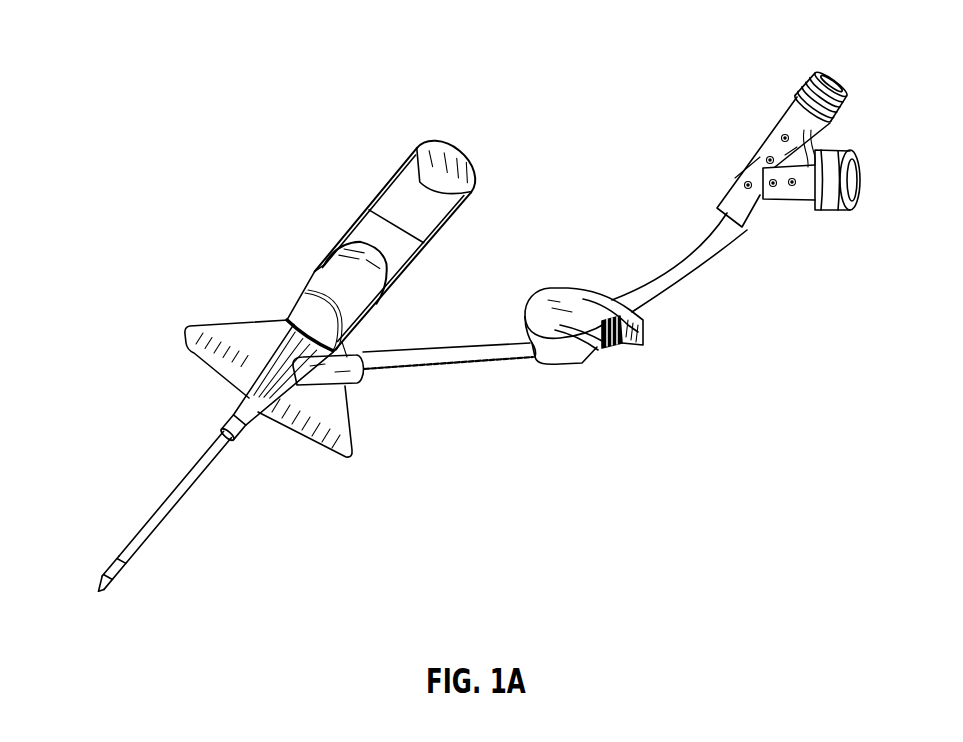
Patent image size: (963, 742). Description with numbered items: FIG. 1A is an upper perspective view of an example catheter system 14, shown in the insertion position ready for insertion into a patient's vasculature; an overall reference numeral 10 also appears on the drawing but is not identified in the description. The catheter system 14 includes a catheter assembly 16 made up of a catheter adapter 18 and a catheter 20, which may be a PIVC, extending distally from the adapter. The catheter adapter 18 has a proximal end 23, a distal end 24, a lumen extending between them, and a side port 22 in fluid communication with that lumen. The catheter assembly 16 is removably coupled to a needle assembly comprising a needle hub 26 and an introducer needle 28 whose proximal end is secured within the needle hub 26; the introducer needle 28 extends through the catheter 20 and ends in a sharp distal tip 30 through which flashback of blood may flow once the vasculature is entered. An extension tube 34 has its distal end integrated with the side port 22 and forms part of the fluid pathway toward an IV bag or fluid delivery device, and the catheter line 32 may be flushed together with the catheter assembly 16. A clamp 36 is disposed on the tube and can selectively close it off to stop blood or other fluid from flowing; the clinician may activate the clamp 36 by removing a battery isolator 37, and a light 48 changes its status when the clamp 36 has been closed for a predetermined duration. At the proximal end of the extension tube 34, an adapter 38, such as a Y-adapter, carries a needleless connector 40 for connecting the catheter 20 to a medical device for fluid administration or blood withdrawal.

The catheter system 10 is at (288, 58).
The catheter system 14 is at (157, 523).
The catheter assembly 16 is at (441, 350).
The catheter adapter 18 is at (270, 370).
The catheter 20 is at (190, 475).
The side port 22 is at (352, 356).
The proximal end 23 is at (290, 311).
The distal end 24 is at (213, 423).
The needle hub 26 is at (402, 193).
The introducer needle 28 is at (100, 585).
The sharp distal tip 30 is at (100, 592).
The catheter line 32 is at (441, 388).
The extension tube 34 is at (723, 238).
The clamp 36 is at (573, 386).
The battery isolator 37 is at (585, 349).
The adapter 38 is at (734, 196).
The needleless connector 40 is at (790, 118).
The light 48 is at (525, 314).